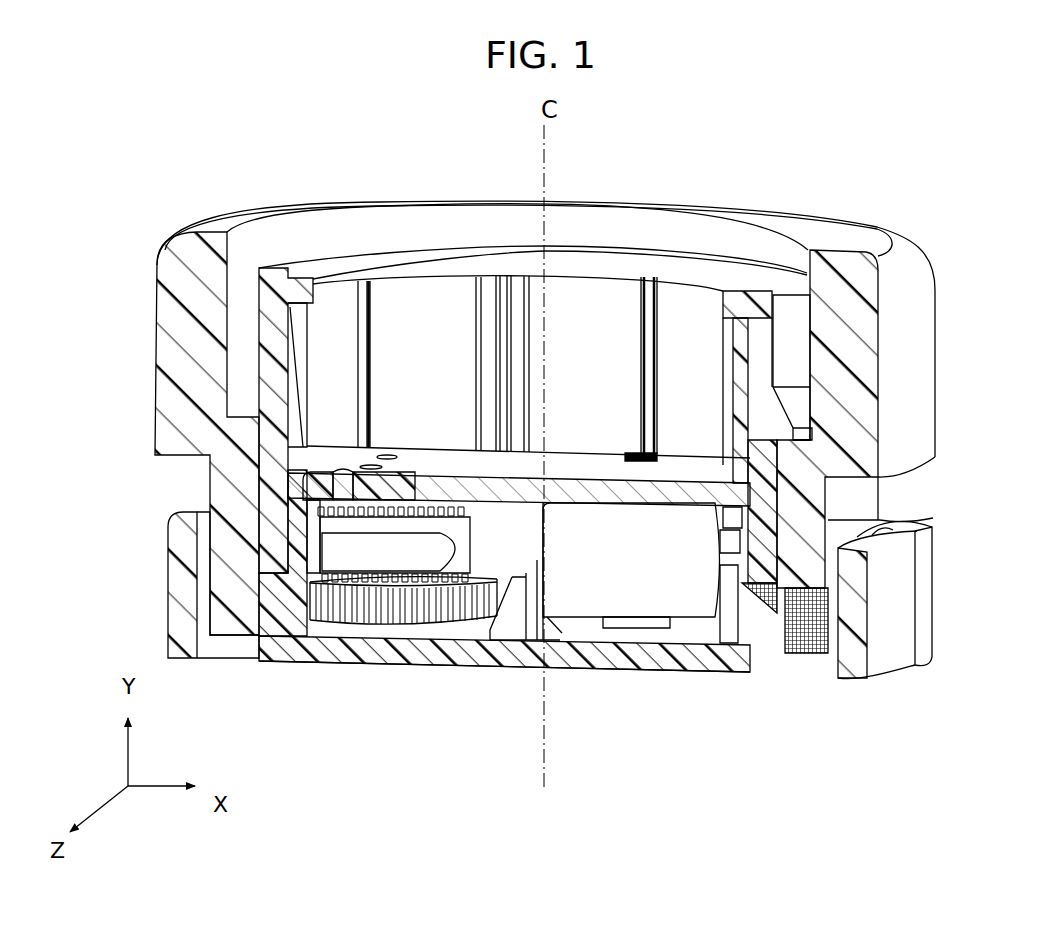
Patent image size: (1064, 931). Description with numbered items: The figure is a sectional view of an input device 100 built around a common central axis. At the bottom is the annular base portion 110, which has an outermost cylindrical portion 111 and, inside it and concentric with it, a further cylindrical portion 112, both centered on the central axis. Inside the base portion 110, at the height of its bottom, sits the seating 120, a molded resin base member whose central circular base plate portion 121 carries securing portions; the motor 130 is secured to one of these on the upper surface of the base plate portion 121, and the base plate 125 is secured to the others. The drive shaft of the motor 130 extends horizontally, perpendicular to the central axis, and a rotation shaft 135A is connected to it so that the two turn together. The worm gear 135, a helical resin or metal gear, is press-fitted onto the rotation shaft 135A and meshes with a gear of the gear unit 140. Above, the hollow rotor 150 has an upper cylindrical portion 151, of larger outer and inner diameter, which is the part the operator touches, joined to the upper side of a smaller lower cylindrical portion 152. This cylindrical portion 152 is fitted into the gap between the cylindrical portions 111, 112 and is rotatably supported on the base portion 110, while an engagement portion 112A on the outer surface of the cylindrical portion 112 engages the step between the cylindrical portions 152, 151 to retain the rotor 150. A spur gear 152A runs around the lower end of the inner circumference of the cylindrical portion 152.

The input device 100 is at (820, 128).
The base portion 110 is at (908, 670).
The cylindrical portion 111 is at (917, 627).
The cylindrical portion 112 is at (680, 272).
The engagement portion 112A is at (792, 402).
The seating 120 is at (443, 670).
The base plate portion 121 is at (587, 672).
The base plate 125 is at (352, 458).
The motor 130 is at (625, 590).
The worm gear 135 is at (317, 520).
The rotation shaft 135A is at (307, 537).
The gear unit 140 is at (330, 622).
The rotor 150 is at (922, 236).
The cylindrical portion 151 is at (920, 310).
The cylindrical portion 152 is at (887, 517).
The gear 152A is at (808, 653).